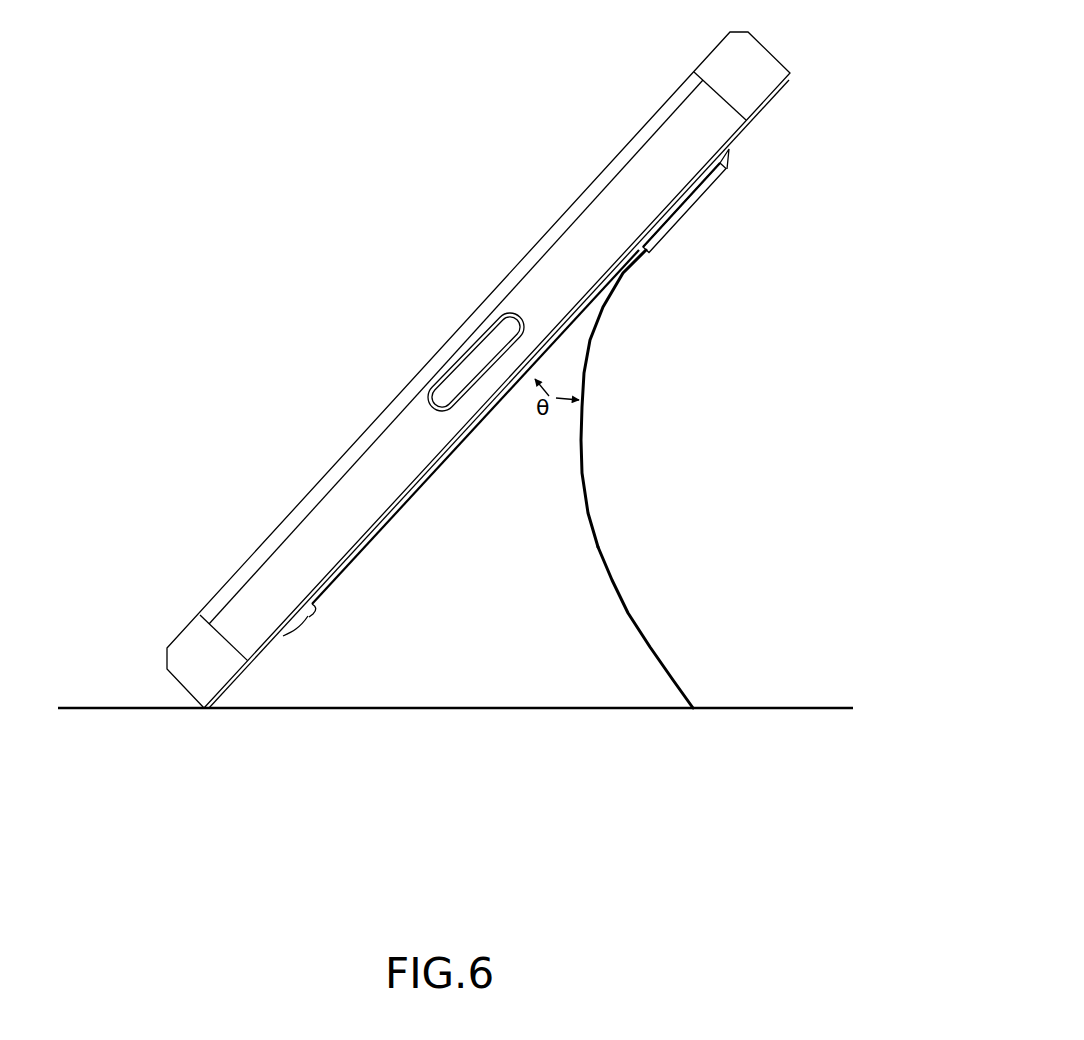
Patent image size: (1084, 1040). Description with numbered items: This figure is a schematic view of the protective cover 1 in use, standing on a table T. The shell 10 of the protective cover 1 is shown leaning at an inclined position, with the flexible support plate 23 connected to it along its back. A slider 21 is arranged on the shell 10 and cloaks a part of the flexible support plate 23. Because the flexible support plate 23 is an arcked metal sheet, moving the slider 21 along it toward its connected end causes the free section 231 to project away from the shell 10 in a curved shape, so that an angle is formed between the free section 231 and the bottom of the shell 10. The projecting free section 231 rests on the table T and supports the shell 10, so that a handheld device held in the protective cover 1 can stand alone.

The protective cover 1 is at (360, 353).
The shell 10 is at (320, 465).
The slider 21 is at (680, 215).
The flexible support plate 23 is at (587, 432).
The free section 231 is at (598, 552).
The table T is at (455, 708).